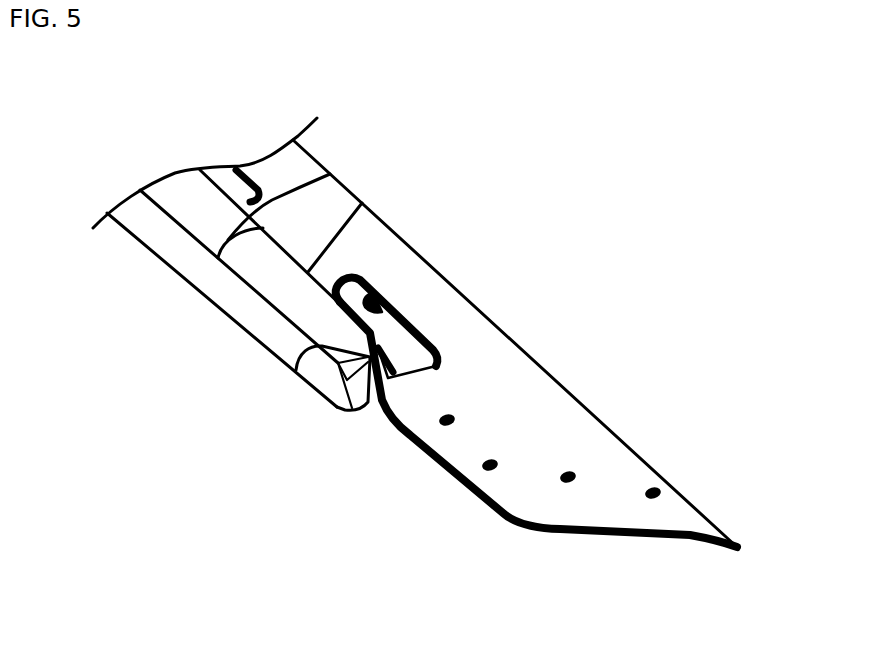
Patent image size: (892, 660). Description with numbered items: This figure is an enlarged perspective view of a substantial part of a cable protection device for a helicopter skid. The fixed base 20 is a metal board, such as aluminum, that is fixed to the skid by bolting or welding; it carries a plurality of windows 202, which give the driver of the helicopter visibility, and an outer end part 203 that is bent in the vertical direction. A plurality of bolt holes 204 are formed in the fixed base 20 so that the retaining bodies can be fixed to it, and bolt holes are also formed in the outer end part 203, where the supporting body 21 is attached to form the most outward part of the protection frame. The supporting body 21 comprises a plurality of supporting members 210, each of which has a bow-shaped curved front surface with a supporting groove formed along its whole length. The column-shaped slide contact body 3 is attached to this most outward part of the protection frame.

The slide contact body 3 is at (208, 302).
The fixed base 20 is at (603, 392).
The supporting body 21 is at (391, 176).
The supporting member 210 is at (330, 174).
The window 202 is at (365, 288).
The outer end part 203 is at (382, 312).
The bolt hole 204 is at (447, 420).